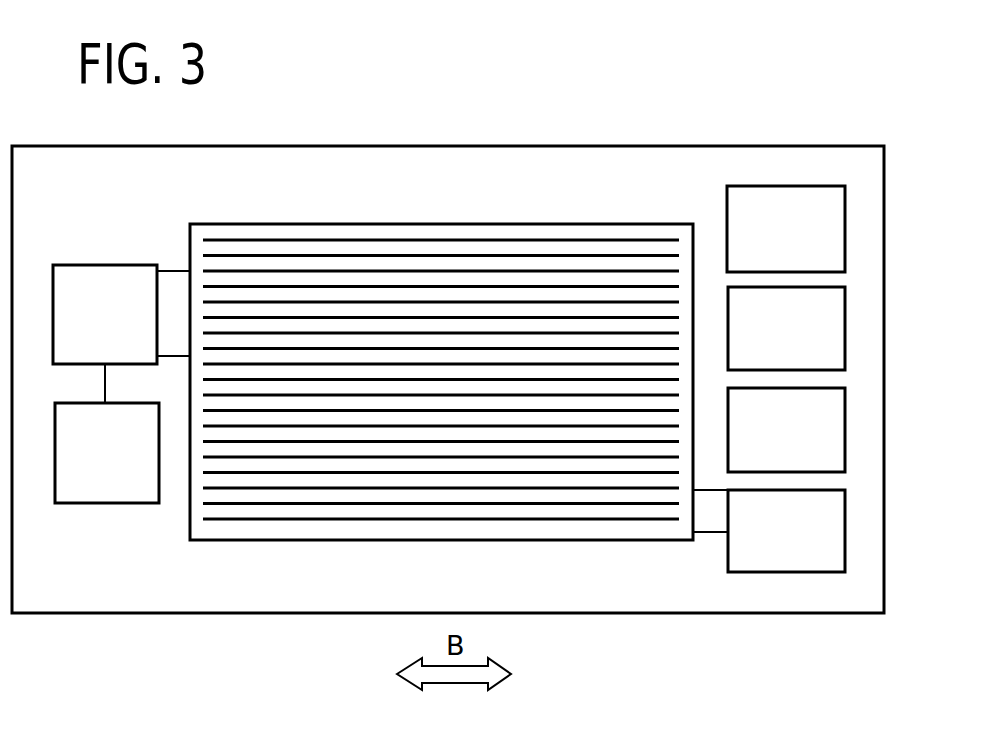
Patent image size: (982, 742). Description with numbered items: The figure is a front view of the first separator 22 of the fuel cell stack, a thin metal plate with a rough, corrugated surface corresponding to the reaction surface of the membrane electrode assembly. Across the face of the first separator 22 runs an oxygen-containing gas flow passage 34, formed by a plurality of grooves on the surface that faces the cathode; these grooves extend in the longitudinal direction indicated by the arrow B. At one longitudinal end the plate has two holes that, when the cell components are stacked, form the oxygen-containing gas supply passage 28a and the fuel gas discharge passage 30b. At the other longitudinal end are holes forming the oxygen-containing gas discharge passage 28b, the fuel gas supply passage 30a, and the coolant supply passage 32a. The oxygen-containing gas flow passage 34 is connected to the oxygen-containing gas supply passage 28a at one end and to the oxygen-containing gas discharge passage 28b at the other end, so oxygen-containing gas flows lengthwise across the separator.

The first separator 22 is at (622, 144).
The oxygen-containing gas flow passage 34 is at (350, 240).
The oxygen-containing gas supply passage 28a is at (121, 314).
The oxygen-containing gas discharge passage 28b is at (769, 531).
The fuel gas supply passage 30a is at (786, 229).
The fuel gas discharge passage 30b is at (107, 433).
The coolant supply passage 32a is at (786, 379).